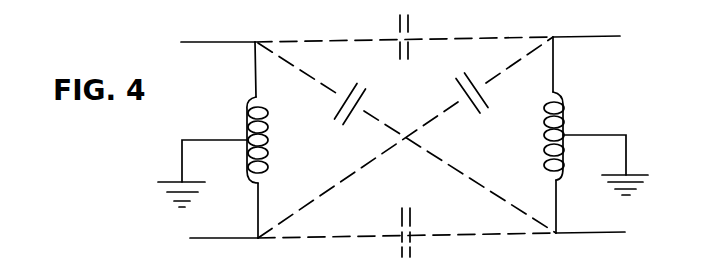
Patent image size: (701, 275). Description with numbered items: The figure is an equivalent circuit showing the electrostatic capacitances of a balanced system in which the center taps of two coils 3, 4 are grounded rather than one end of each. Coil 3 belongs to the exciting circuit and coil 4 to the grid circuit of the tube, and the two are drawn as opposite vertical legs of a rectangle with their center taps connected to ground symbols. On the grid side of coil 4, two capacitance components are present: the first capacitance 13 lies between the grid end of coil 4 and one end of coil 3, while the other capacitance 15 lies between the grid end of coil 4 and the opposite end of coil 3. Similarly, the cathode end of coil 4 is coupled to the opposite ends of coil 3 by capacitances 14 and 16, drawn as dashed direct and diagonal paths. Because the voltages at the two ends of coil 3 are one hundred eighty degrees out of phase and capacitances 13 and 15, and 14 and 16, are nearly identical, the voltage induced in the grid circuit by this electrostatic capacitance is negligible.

The coil 3 is at (247, 105).
The coil 4 is at (565, 102).
The capacitance 13 is at (412, 24).
The capacitance 14 is at (338, 111).
The capacitance 15 is at (486, 100).
The capacitance 16 is at (413, 223).